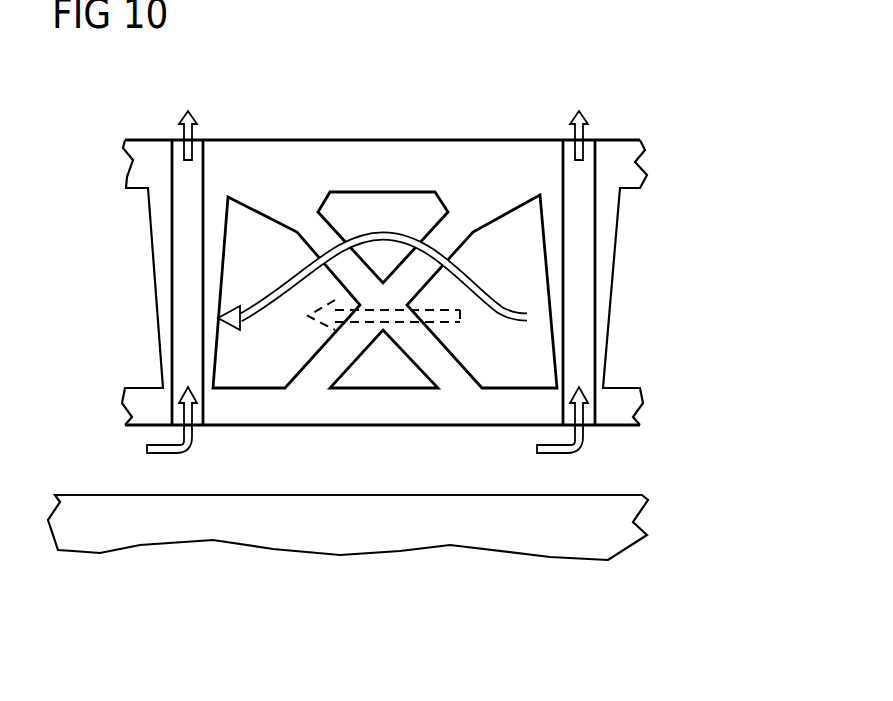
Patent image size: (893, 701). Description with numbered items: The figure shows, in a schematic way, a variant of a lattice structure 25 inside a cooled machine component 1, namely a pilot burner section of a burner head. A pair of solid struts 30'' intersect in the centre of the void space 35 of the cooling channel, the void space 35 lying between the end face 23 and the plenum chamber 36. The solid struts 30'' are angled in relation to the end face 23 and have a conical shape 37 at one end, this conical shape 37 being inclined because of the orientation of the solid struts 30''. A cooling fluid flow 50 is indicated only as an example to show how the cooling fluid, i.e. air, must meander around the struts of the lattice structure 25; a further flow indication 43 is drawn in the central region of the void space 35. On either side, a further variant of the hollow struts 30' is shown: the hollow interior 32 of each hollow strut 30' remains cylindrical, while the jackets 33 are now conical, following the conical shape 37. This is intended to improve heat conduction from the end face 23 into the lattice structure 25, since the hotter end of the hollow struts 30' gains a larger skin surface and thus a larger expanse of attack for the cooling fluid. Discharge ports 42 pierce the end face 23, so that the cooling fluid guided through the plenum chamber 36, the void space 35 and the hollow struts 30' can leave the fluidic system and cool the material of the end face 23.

The cooled machine component 1 is at (182, 591).
The end face 23 is at (500, 140).
The lattice structure 25 is at (676, 264).
The hollow struts 30' is at (425, 282).
The solid struts 30'' is at (437, 290).
The hollow interior 32 is at (587, 292).
The jackets 33 is at (154, 292).
The void space 35 is at (243, 271).
The plenum chamber 36 is at (365, 472).
The conical shape 37 is at (215, 213).
The discharge ports 42 is at (181, 140).
The leakage flow 43 is at (407, 322).
The cooling fluid flow 50 is at (500, 307).